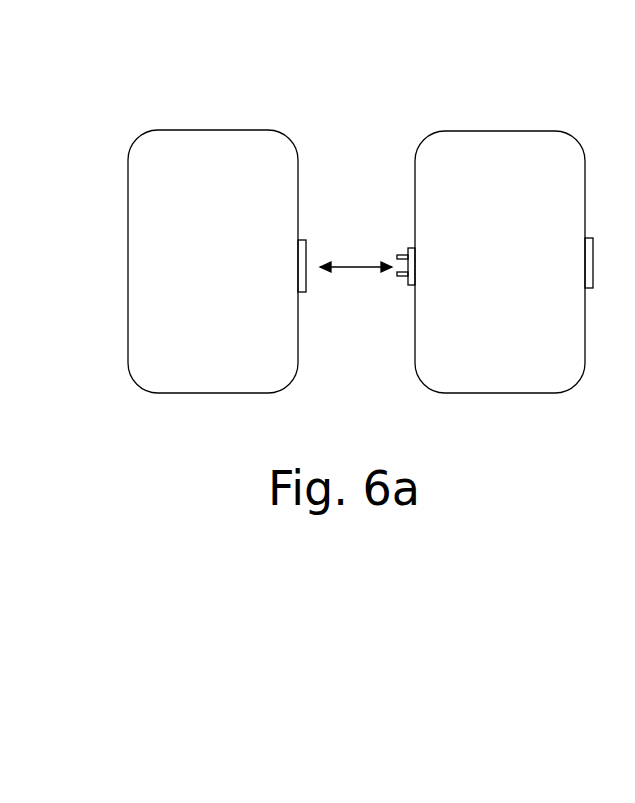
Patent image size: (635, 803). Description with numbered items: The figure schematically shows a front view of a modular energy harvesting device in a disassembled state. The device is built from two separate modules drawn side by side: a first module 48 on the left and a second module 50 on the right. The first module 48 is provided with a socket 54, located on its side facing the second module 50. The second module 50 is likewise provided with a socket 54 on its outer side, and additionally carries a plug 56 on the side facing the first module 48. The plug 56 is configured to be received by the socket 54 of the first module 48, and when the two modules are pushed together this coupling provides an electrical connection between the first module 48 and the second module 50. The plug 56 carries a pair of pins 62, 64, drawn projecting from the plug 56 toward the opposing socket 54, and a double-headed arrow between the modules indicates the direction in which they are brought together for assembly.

The first module 48 is at (223, 145).
The second module 50 is at (531, 148).
The socket 54 is at (307, 276).
The plug 56 is at (401, 285).
The pin 62 is at (397, 256).
The pin 64 is at (397, 274).